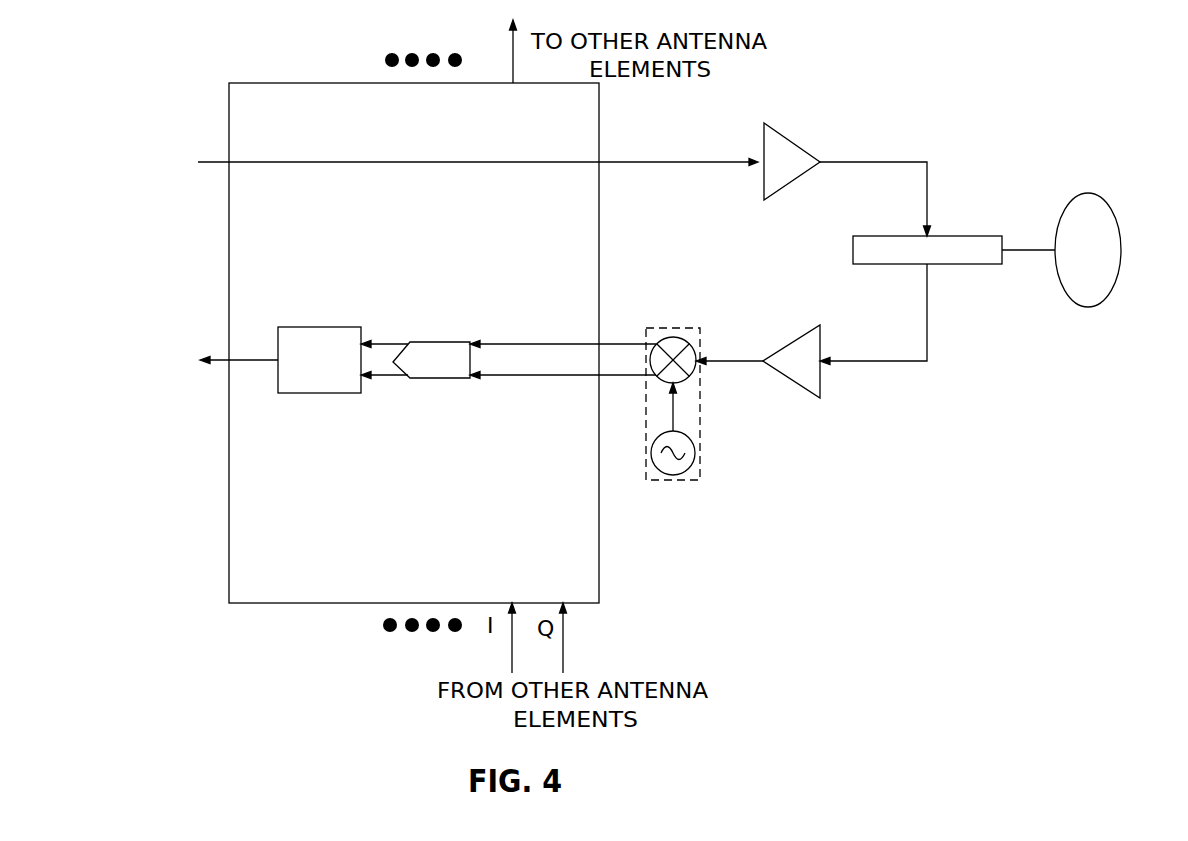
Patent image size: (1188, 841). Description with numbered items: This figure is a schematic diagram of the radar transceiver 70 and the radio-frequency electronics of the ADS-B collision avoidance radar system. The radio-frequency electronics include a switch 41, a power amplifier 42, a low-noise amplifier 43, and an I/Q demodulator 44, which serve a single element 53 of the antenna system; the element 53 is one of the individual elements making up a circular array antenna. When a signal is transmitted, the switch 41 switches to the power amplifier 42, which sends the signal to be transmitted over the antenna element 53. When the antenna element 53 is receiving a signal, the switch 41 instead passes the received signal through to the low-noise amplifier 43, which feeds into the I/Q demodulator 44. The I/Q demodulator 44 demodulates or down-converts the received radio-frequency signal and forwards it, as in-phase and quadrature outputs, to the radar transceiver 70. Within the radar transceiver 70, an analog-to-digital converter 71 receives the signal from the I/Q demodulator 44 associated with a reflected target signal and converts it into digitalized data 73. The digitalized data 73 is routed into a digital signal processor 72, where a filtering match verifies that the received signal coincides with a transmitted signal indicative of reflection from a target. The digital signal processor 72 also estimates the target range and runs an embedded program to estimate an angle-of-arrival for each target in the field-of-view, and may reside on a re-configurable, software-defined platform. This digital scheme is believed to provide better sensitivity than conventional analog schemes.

The switch 41 is at (960, 236).
The power amplifier 42 is at (801, 163).
The low-noise amplifier 43 is at (821, 327).
The I/Q demodulator 44 is at (700, 426).
The element 53 is at (1106, 235).
The radar transceiver 70 is at (284, 605).
The analog-to-digital converter 71 is at (430, 379).
The digital signal processor 72 is at (290, 394).
The digitalized data 73 is at (388, 343).